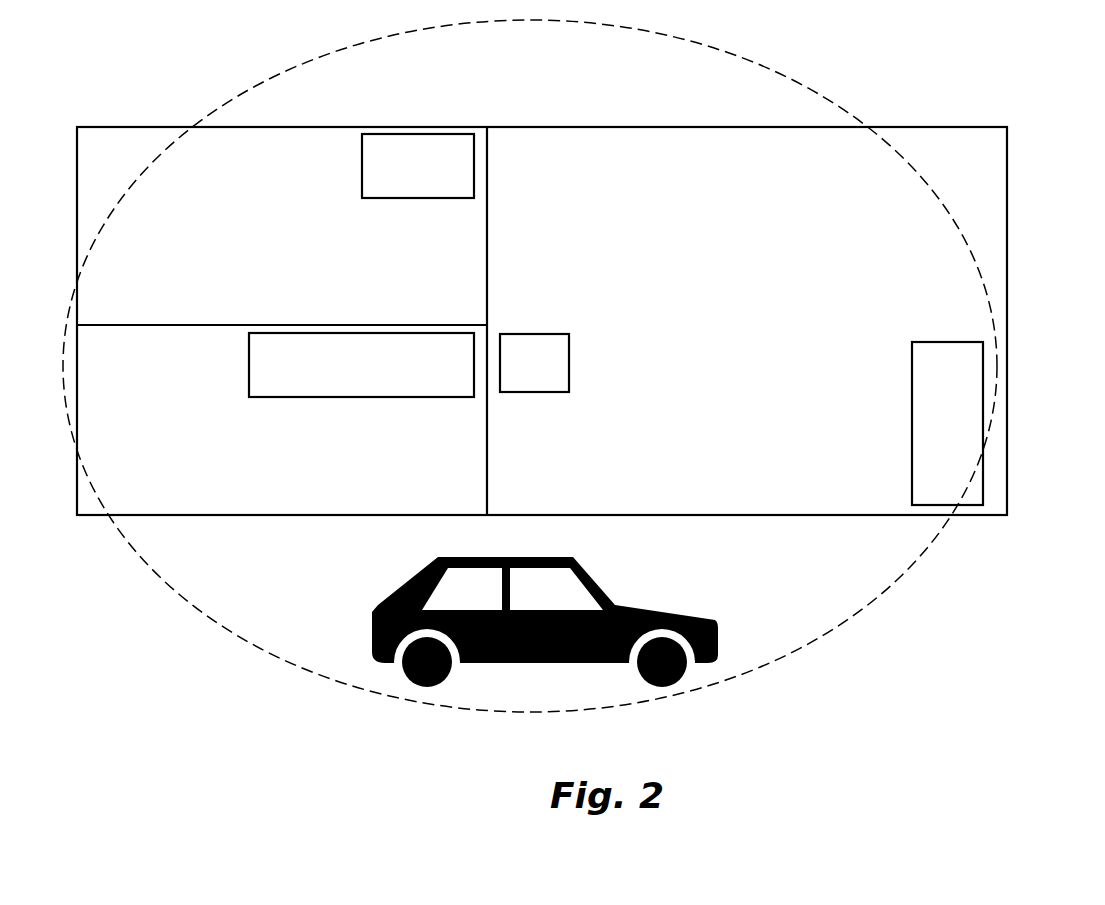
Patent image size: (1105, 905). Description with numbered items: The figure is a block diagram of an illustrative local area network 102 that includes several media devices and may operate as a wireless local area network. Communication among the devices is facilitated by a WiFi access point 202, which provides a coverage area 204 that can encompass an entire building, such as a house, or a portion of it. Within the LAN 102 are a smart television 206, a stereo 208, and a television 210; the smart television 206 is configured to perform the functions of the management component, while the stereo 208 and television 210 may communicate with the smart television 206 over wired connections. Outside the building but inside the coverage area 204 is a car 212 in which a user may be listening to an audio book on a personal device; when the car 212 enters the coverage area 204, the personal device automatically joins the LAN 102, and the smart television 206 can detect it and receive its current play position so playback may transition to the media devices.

The local area network 102 is at (1040, 142).
The wireless access point 202 is at (535, 333).
The coverage area 204 is at (920, 560).
The smart television 206 is at (917, 340).
The stereo 208 is at (418, 198).
The television 210 is at (362, 398).
The car 212 is at (405, 583).